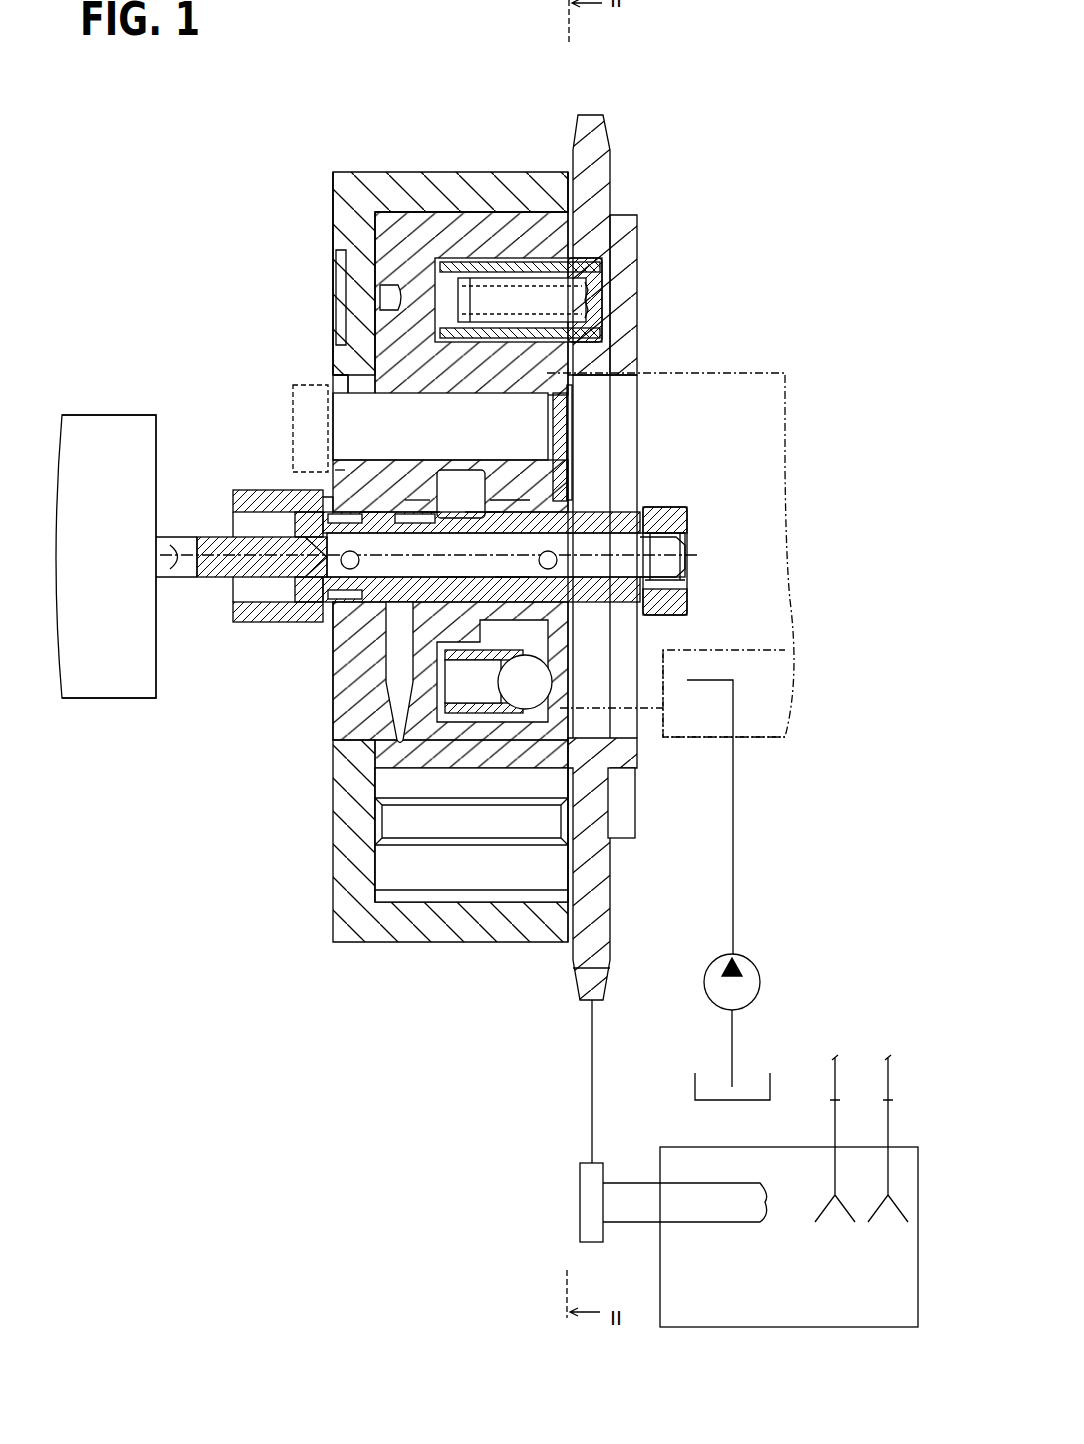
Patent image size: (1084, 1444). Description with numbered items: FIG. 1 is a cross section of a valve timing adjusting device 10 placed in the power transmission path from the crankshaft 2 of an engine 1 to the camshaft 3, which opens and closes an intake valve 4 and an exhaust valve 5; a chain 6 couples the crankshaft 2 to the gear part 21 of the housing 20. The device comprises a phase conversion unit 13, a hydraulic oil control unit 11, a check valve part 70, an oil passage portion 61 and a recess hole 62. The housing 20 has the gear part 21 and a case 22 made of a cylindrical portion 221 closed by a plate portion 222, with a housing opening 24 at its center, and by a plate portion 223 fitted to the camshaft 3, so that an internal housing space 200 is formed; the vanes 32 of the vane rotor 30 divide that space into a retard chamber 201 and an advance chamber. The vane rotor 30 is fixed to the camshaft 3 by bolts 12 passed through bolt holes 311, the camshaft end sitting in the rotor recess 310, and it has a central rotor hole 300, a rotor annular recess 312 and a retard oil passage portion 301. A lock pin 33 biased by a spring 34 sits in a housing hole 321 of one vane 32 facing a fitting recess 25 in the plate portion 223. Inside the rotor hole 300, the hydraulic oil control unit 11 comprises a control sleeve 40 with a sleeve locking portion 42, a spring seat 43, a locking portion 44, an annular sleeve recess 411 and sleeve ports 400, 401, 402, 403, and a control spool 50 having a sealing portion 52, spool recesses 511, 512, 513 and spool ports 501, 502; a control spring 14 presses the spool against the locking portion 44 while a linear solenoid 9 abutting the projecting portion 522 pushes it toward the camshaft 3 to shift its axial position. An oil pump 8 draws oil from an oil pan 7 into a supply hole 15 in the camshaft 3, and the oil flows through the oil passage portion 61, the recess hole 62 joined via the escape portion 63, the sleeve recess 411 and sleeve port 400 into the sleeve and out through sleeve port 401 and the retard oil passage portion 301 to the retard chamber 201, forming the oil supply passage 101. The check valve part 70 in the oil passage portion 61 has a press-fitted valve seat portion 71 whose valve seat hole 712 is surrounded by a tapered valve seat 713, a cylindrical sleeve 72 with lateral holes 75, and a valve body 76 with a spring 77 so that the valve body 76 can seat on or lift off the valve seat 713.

The engine 1 is at (808, 1147).
The crankshaft 2 is at (624, 1224).
The camshaft 3 is at (780, 373).
The intake valve 4 is at (834, 1175).
The exhaust valve 5 is at (890, 1175).
The chain 6 is at (594, 1118).
The oil pan 7 is at (695, 1085).
The oil pump 8 is at (762, 982).
The linear solenoid 9 is at (108, 415).
The valve timing adjusting device 10 is at (548, 67).
The hydraulic oil control unit 11 is at (182, 526).
The bolts 12 is at (293, 425).
The phase conversion unit 13 is at (485, 104).
The control spring 14 is at (665, 508).
The supply hole 15 is at (700, 662).
The housing 20 is at (512, 159).
The gear part 21 is at (594, 115).
The case 22 is at (341, 172).
The housing opening 24 is at (333, 386).
The fitting recess 25 is at (606, 276).
The vane rotor 30 is at (472, 210).
The vanes 32 is at (415, 215).
The lock pin 33 is at (604, 300).
The spring 34 is at (640, 200).
The control sleeve 40 is at (235, 500).
The sleeve locking portion 42 is at (340, 470).
The spring seat 43 is at (690, 527).
The locking portion 44 is at (322, 497).
The control spool 50 is at (235, 618).
The sealing portion 52 is at (262, 603).
The oil passage portion 61 is at (460, 708).
The recess hole 62 is at (452, 570).
The escape portion 63 is at (552, 648).
The check valve part 70 is at (490, 700).
The valve seat portion 71 is at (543, 700).
The sleeve 72 is at (452, 700).
The lateral holes 75 is at (512, 700).
The valve body 76 is at (530, 700).
The spring 77 is at (470, 700).
The oil supply passage 101 is at (736, 936).
The internal housing space 200 is at (425, 865).
The retard chamber 201 is at (398, 855).
The cylindrical portion 221 is at (432, 185).
The plate portion 222 is at (342, 240).
The plate portion 223 is at (622, 238).
The rotor hole 300 is at (686, 565).
The retard oil passage portion 301 is at (333, 652).
The rotor recess 310 is at (580, 380).
The bolt holes 311 is at (332, 408).
The rotor annular recess 312 is at (495, 500).
The housing hole 321 is at (380, 292).
The sleeve port 400 is at (455, 470).
The sleeve port 401 is at (408, 500).
The sleeve port 402 is at (530, 577).
The sleeve port 403 is at (575, 500).
The sleeve recess 411 is at (433, 512).
The spool port 501 is at (540, 558).
The spool port 502 is at (358, 560).
The spool recess 511 is at (475, 512).
The spool recess 512 is at (560, 500).
The spool recess 513 is at (365, 512).
The projecting portion 522 is at (197, 557).
The valve seat hole 712 is at (440, 690).
The valve seat 713 is at (400, 680).